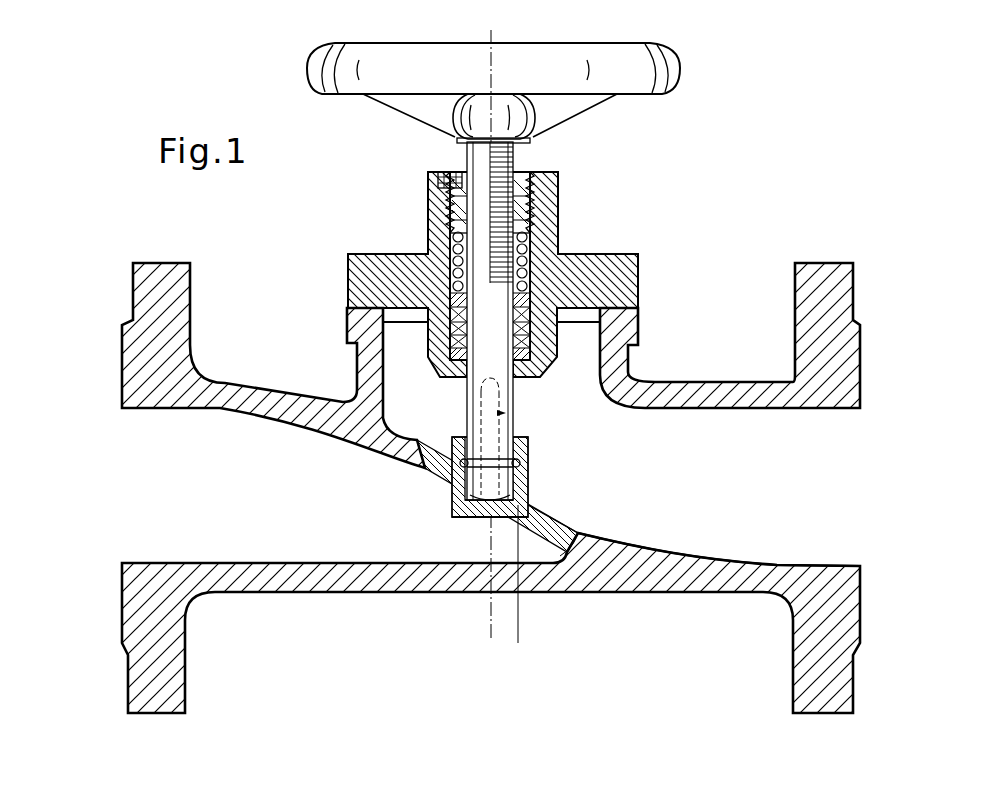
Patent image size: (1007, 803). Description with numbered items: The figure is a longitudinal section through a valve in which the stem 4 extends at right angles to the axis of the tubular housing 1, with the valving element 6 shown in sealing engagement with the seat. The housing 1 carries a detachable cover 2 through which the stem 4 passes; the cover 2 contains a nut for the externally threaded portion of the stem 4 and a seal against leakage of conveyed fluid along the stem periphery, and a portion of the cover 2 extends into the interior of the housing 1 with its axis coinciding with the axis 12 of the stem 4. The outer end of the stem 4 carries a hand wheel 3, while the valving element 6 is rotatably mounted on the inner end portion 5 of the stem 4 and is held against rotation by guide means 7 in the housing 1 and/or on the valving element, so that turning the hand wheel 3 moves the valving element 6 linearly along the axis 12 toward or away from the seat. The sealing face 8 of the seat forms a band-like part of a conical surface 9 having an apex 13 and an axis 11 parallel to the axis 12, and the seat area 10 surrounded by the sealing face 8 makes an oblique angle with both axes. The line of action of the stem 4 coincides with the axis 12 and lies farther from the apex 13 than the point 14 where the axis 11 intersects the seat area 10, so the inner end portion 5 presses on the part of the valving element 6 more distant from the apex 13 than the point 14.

The housing 1 is at (838, 363).
The cover 2 is at (617, 262).
The hand wheel 3 is at (660, 68).
The stem 4 is at (515, 158).
The inner end portion of the stem 5 is at (528, 483).
The valving element 6 is at (527, 447).
The guide means 7 is at (504, 413).
The sealing face 8 is at (580, 527).
The conical surface 9 is at (532, 606).
The seat area 10 is at (751, 540).
The axis of the conical surface 11 is at (528, 548).
The axis of the stem 12 is at (512, 518).
The apex 13 is at (457, 519).
The point of intersection 14 is at (512, 521).